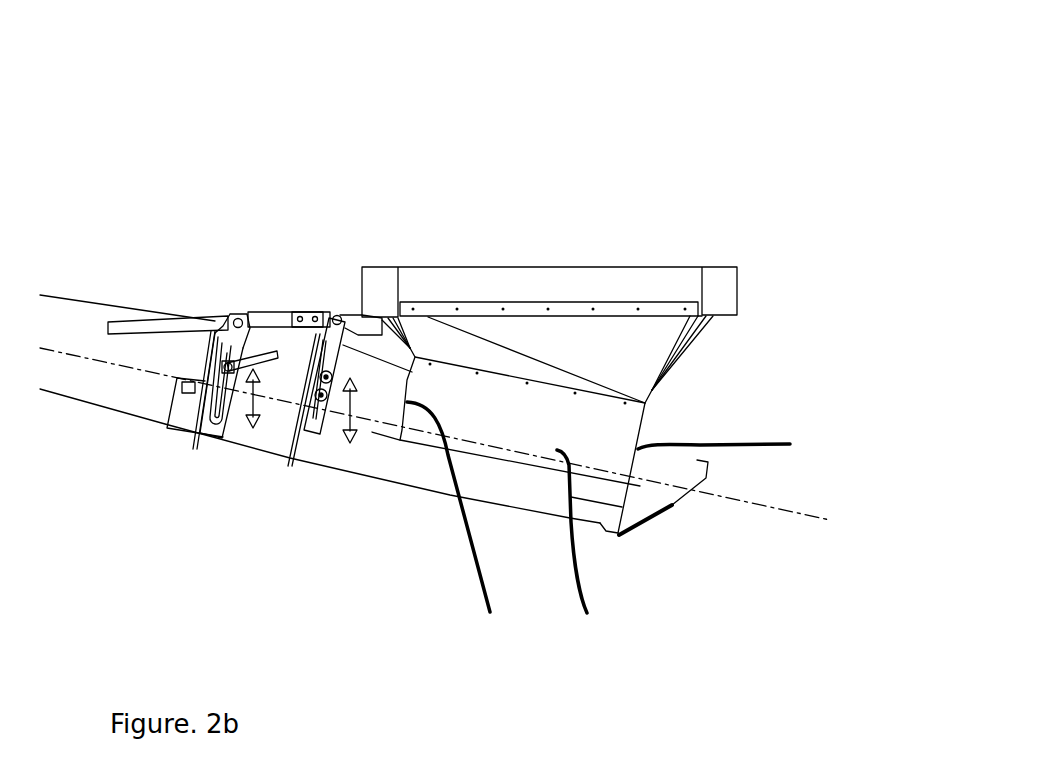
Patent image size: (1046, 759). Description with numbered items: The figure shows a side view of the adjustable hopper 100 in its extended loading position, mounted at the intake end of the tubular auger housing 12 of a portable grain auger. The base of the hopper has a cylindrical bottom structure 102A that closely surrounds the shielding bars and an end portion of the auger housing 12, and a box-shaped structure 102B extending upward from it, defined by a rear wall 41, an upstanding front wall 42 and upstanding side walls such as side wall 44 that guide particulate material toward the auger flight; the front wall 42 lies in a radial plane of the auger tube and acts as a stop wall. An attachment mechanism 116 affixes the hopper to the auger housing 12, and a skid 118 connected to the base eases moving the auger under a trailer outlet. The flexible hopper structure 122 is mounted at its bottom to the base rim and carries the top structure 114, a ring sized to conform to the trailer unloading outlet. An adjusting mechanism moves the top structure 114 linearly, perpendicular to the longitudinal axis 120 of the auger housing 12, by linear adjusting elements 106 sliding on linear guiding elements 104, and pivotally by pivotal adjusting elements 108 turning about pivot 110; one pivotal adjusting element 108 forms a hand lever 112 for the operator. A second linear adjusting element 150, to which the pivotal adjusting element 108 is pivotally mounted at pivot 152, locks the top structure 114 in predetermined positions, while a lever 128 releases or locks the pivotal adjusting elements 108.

The auger housing 12 is at (83, 322).
The adjustable hopper 100 is at (692, 106).
The cylindrical bottom structure 102A is at (498, 495).
The box-shaped structure 102B is at (535, 405).
The linear guiding element 104 is at (287, 427).
The linear adjusting element 106 is at (338, 427).
The pivotal adjusting element 108 is at (328, 308).
The pivot 110 is at (342, 303).
The hand lever 112 is at (170, 325).
The top structure 114 is at (523, 277).
The attachment mechanism 116 is at (174, 394).
The skid 118 is at (676, 507).
The longitudinal axis 120 is at (615, 430).
The flexible hopper structure 122 is at (627, 353).
The lever 128 is at (362, 325).
The second linear adjusting element 150 is at (243, 310).
The pivot 152 is at (234, 318).
The rear wall 41 is at (742, 451).
The front wall 42 is at (458, 536).
The side wall 44 is at (586, 560).